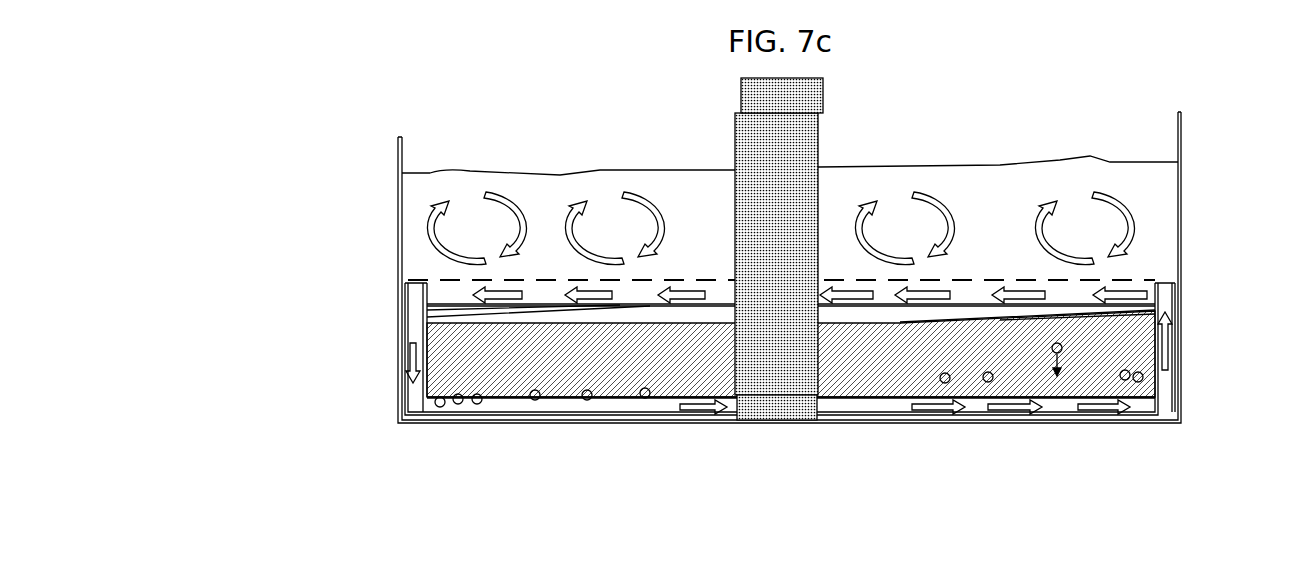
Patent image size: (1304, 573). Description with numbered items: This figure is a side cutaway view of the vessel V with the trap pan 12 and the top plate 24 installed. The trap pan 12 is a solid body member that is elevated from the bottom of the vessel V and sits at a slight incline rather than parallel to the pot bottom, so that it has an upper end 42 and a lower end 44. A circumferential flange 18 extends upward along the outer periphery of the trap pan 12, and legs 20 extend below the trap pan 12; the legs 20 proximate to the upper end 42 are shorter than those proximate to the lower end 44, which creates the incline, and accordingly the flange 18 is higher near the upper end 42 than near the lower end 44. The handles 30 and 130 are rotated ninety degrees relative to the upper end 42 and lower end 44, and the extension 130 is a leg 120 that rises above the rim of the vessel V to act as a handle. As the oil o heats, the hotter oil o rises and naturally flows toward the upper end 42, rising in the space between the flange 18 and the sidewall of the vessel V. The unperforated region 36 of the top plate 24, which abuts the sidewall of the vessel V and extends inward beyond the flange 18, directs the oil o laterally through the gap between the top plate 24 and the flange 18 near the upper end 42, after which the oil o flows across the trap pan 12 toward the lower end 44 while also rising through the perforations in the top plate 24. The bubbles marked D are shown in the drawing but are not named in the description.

The vessel V is at (398, 171).
The oil o is at (463, 185).
The top plate 24 is at (607, 280).
The extension 130 is at (735, 126).
The handle 30 is at (823, 96).
The unperforated region 36 is at (430, 283).
The legs 20 is at (427, 302).
The lower end 44 is at (440, 346).
The upper end 42 is at (1143, 332).
The droplets D is at (1148, 377).
The legs 120 is at (758, 417).
The trap pan 12 is at (849, 397).
The circumferential flange 18 is at (892, 365).